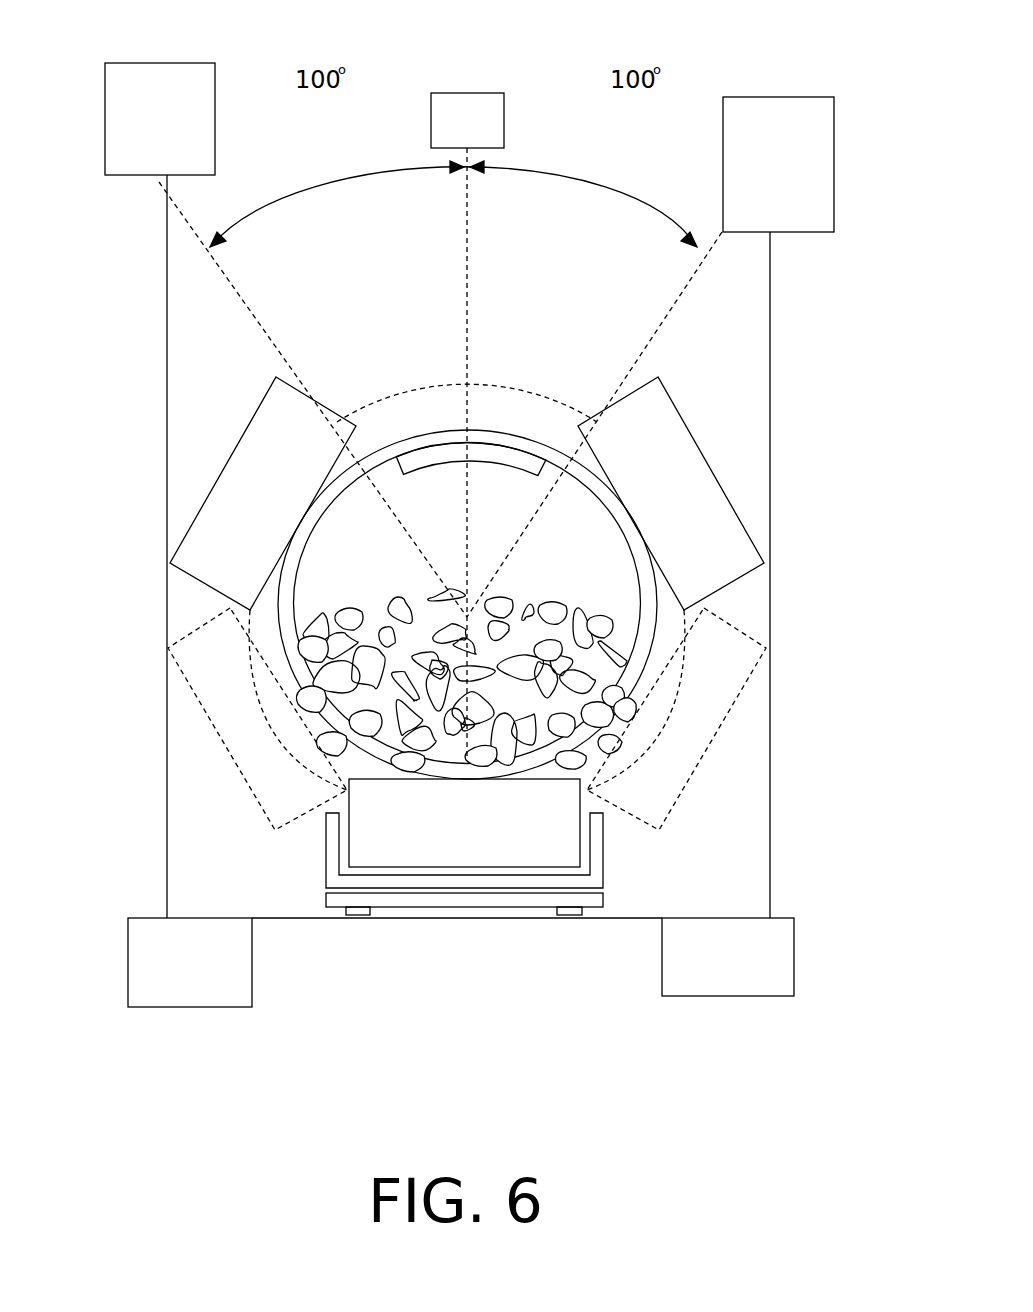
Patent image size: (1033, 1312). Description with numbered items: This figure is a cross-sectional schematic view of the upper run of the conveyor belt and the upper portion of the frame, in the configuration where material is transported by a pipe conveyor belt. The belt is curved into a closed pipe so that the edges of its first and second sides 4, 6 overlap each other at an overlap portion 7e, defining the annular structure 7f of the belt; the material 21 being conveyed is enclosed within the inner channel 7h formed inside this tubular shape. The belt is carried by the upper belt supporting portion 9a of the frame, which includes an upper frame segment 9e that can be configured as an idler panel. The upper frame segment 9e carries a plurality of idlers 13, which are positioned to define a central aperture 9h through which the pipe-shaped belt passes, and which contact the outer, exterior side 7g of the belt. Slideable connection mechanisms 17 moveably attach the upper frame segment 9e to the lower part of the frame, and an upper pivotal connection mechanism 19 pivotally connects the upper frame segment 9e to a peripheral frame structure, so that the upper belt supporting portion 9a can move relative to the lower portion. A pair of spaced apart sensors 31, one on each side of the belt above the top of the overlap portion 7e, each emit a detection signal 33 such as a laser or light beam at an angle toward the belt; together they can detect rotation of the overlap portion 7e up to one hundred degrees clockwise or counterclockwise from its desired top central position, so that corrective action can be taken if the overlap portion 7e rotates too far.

The first side 4 is at (550, 452).
The second side 6 is at (397, 470).
The overlap portion 7e is at (500, 430).
The annular structure 7f is at (742, 618).
The exterior side 7g is at (575, 750).
The channel 7h is at (342, 563).
The upper belt supporting portion 9a is at (838, 340).
The upper frame segment 9e is at (167, 367).
The central aperture 9h is at (413, 412).
The idlers 13 is at (225, 492).
The slideable connection mechanisms 17 is at (192, 1007).
The upper pivotal connection mechanism 19 is at (468, 100).
The material 21 is at (562, 668).
The sensors 31 is at (148, 72).
The detection signal 33 is at (228, 285).